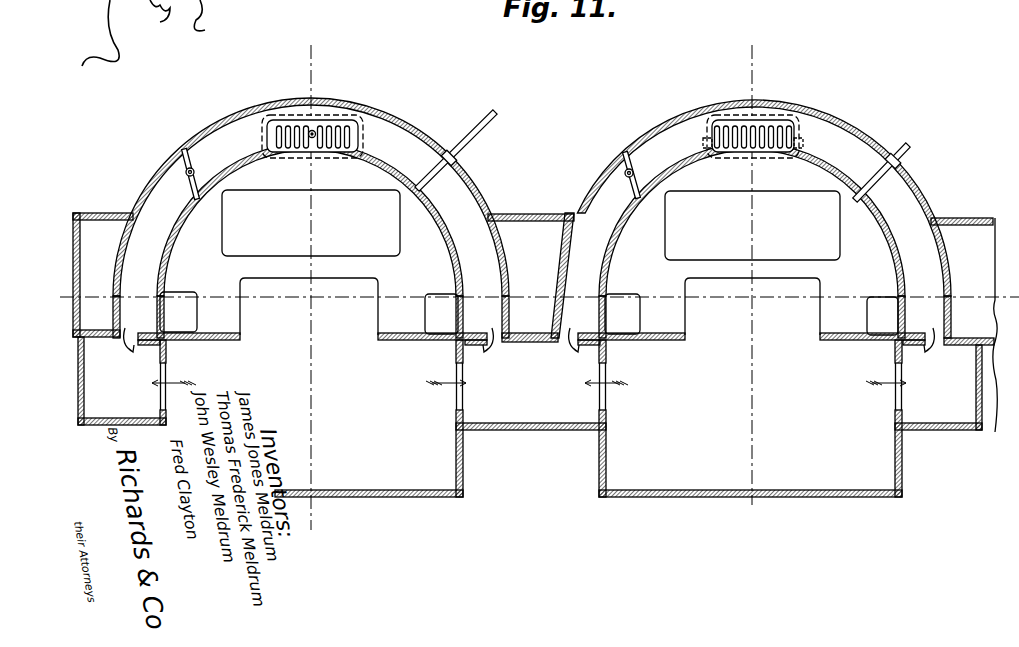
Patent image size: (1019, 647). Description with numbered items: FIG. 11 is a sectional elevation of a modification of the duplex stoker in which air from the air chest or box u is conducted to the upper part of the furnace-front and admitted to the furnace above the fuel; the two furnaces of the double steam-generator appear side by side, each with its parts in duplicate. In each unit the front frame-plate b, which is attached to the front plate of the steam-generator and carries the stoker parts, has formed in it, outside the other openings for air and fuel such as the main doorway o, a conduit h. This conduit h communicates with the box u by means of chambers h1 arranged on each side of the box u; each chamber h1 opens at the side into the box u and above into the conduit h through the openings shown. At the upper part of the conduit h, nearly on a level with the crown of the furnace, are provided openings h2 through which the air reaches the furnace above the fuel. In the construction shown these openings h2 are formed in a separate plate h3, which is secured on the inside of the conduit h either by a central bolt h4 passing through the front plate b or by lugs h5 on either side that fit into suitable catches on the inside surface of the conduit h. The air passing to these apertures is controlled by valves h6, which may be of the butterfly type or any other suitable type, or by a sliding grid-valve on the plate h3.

The front frame-plate b is at (240, 116).
The conduit h is at (167, 196).
The chamber h1 is at (530, 383).
The openings h2 is at (330, 124).
The separate plate h3 is at (292, 124).
The central bolt h4 is at (311, 136).
The lugs h5 is at (703, 143).
The valves h6 is at (186, 162).
The main doorway o is at (530, 306).
The air chest or box u is at (531, 415).